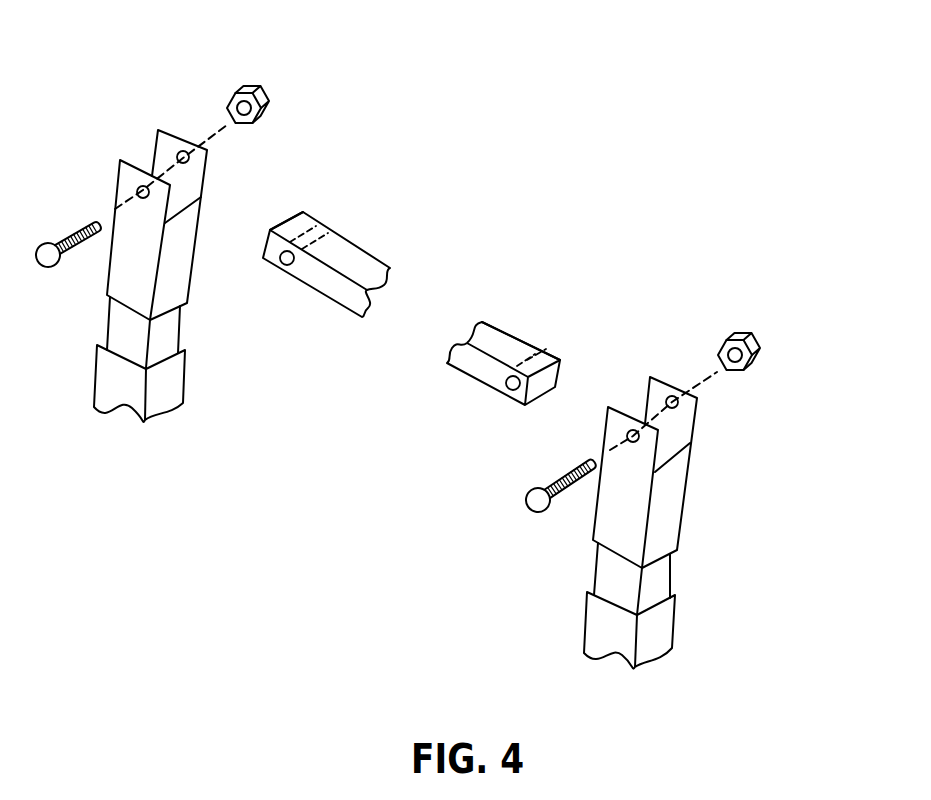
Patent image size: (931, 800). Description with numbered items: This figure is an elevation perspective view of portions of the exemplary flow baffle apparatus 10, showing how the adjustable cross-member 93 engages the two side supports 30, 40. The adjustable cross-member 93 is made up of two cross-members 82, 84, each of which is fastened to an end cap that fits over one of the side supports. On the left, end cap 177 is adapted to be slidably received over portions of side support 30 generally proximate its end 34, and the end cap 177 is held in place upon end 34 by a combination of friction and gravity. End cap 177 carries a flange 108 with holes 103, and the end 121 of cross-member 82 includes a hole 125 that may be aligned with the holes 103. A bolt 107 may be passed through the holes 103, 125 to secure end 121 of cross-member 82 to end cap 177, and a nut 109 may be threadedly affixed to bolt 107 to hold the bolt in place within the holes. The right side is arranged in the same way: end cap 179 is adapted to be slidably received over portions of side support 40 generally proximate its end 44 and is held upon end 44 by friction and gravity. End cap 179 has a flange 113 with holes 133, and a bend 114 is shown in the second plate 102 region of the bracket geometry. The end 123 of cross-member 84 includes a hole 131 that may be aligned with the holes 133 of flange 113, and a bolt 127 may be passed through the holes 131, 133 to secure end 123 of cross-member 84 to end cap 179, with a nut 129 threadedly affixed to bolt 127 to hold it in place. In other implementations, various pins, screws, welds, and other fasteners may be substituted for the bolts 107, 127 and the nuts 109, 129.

The bracket assembly 10 is at (590, 122).
The side support 30 is at (173, 395).
The end 34 is at (172, 330).
The side support 40 is at (647, 640).
The end 44 is at (687, 472).
The cross-member 82 is at (341, 230).
The cross-member 84 is at (528, 334).
The adjustable cross-member 93 is at (447, 361).
The second plate of first bracket 102 is at (158, 130).
The holes 103 is at (190, 148).
The bolt 107 is at (80, 252).
The flange 108 is at (207, 173).
The nut 109 is at (252, 84).
The flange 113 is at (607, 432).
The bend line of second bracket 114 is at (690, 445).
The end 121 is at (305, 212).
The end 123 is at (560, 360).
The hole 125 is at (322, 224).
The bolt 127 is at (570, 495).
The nut 129 is at (752, 332).
The hole 131 is at (527, 358).
The holes 133 is at (655, 448).
The end cap 177 is at (120, 160).
The end cap 179 is at (673, 512).